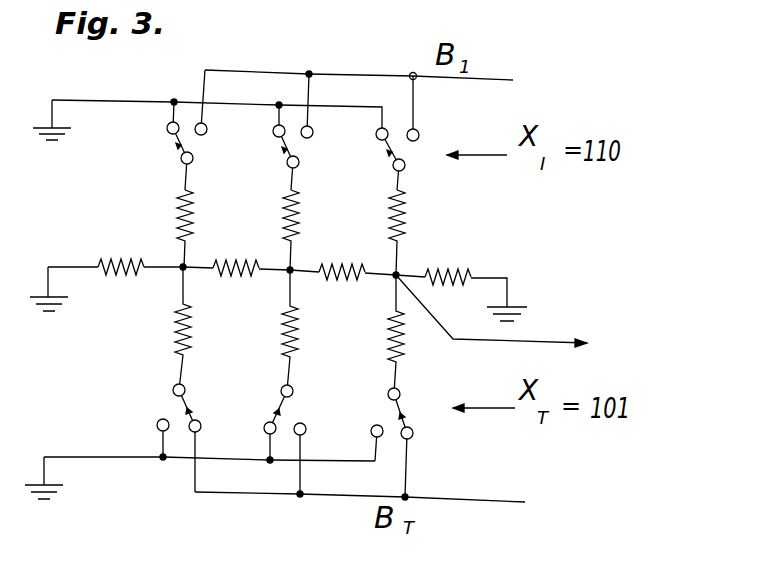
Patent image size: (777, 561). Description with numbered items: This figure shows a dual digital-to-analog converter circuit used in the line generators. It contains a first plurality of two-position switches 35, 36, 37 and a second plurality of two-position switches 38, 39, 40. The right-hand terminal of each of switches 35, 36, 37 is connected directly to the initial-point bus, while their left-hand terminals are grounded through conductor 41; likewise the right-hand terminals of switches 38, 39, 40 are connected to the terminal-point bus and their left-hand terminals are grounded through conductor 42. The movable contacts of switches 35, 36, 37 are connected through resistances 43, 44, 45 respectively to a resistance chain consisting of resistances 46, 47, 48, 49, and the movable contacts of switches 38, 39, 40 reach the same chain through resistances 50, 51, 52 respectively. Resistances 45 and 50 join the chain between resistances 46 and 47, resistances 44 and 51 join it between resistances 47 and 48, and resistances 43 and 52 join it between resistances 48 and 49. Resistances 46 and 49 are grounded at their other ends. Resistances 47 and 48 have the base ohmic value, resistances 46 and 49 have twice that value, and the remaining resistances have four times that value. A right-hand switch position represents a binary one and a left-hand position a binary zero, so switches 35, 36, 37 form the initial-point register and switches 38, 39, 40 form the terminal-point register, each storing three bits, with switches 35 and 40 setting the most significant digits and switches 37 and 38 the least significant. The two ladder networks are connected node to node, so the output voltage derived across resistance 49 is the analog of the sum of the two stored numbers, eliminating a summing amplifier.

The two-position switch 35 is at (394, 149).
The two-position switch 36 is at (286, 147).
The two-position switch 37 is at (174, 146).
The two-position switch 38 is at (173, 435).
The two-position switch 39 is at (279, 436).
The two-position switch 40 is at (386, 438).
The conductor 41 is at (97, 101).
The conductor 42 is at (72, 457).
The resistance 43 is at (391, 224).
The resistance 44 is at (285, 217).
The resistance 45 is at (178, 216).
The resistance 46 is at (121, 269).
The resistance 47 is at (235, 271).
The resistance 48 is at (342, 273).
The resistance 49 is at (448, 276).
The resistance 50 is at (176, 350).
The resistance 51 is at (284, 352).
The resistance 52 is at (390, 356).